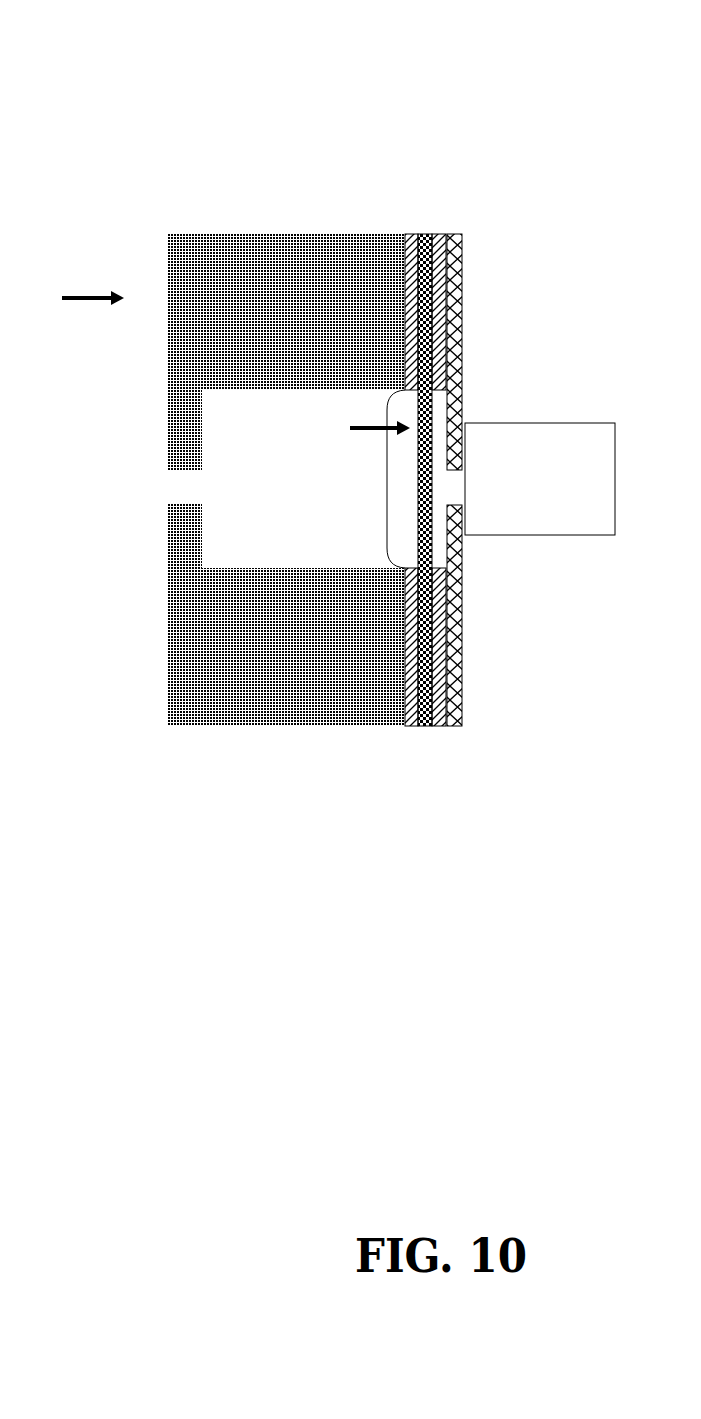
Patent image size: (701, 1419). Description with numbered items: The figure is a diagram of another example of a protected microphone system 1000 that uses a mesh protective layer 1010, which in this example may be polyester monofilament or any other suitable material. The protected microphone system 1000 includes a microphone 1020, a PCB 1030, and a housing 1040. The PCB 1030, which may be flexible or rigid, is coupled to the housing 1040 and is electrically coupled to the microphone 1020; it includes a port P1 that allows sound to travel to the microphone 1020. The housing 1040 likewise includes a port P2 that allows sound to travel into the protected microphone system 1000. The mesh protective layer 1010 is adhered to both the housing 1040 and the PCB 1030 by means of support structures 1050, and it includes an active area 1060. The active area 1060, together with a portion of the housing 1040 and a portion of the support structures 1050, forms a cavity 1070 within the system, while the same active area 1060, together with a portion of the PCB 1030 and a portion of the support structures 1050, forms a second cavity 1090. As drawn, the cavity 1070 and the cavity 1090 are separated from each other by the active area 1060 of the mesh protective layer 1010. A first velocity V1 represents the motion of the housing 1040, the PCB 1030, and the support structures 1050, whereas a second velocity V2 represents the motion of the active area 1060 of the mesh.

The protected microphone system 1000 is at (120, 118).
The mesh protective layer 1010 is at (424, 727).
The microphone 1020 is at (540, 423).
The PCB 1030 is at (462, 275).
The housing 1040 is at (216, 233).
The support structures 1050 is at (410, 233).
The active area 1060 is at (387, 479).
The cavity 1070 is at (232, 543).
The cavity 1090 is at (440, 542).
The port P1 is at (458, 484).
The port P2 is at (164, 484).
The first velocity V1 is at (74, 298).
The second velocity V2 is at (362, 427).